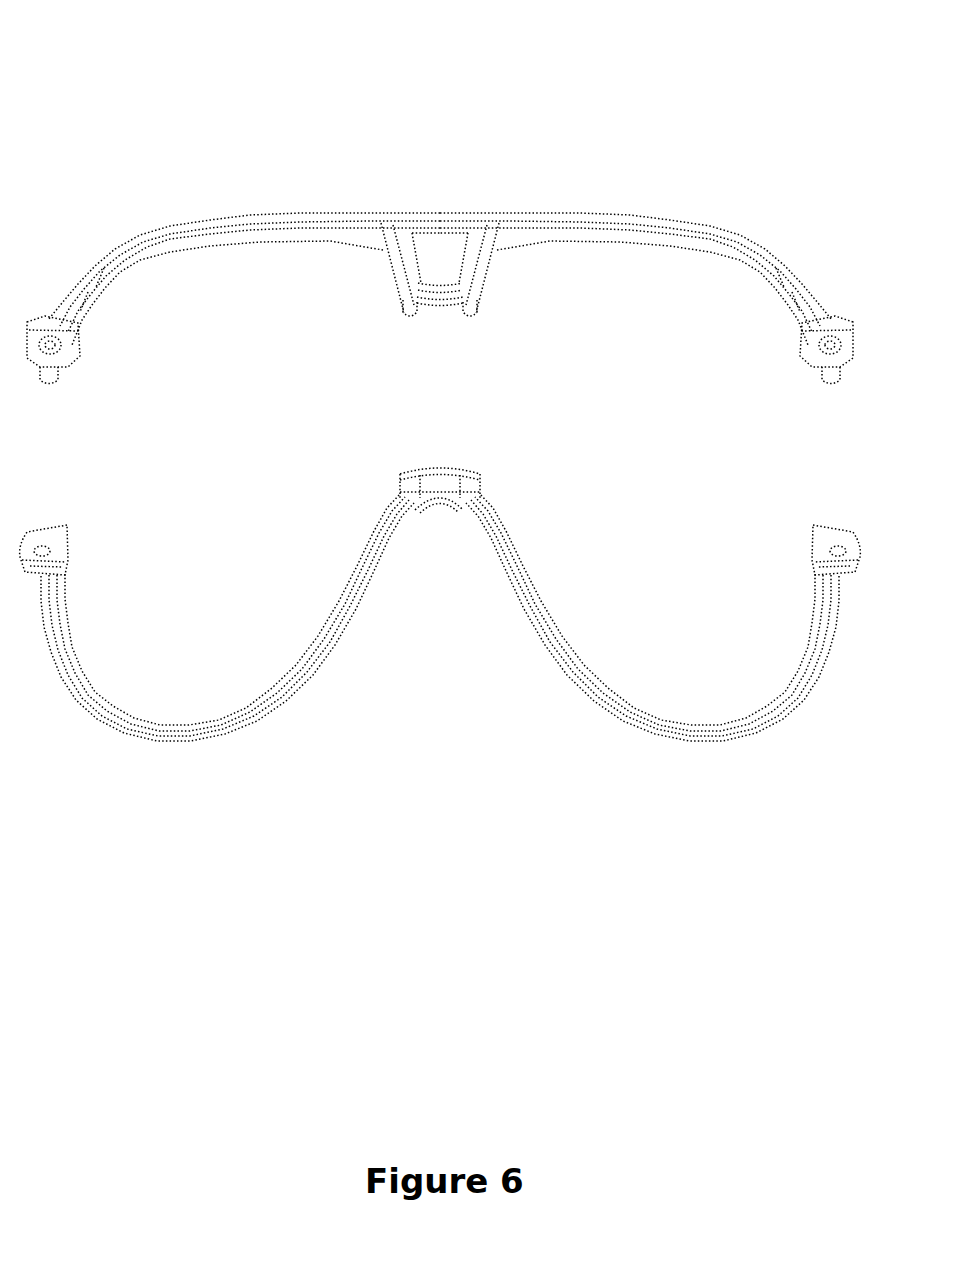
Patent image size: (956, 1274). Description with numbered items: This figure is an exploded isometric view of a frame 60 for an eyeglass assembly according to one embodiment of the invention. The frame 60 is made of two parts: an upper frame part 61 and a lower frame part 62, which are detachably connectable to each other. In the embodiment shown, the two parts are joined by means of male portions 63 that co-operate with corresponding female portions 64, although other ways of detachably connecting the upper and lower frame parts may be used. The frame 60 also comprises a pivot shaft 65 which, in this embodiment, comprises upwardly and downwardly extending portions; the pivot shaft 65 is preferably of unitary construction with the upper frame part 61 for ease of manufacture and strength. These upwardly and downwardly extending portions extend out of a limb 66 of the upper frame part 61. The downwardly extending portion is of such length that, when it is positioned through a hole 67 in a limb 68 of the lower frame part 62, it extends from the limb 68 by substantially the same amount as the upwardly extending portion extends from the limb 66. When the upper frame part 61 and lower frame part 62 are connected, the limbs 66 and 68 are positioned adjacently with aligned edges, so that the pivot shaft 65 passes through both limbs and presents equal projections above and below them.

The frame 60 is at (134, 80).
The upper frame part 61 is at (699, 217).
The lower frame part 62 is at (118, 760).
The male portions 63 is at (443, 316).
The female portions 64 is at (443, 485).
The pivot shaft 65 is at (43, 383).
The limb 66 is at (62, 357).
The hole 67 is at (34, 550).
The limb 68 is at (44, 564).